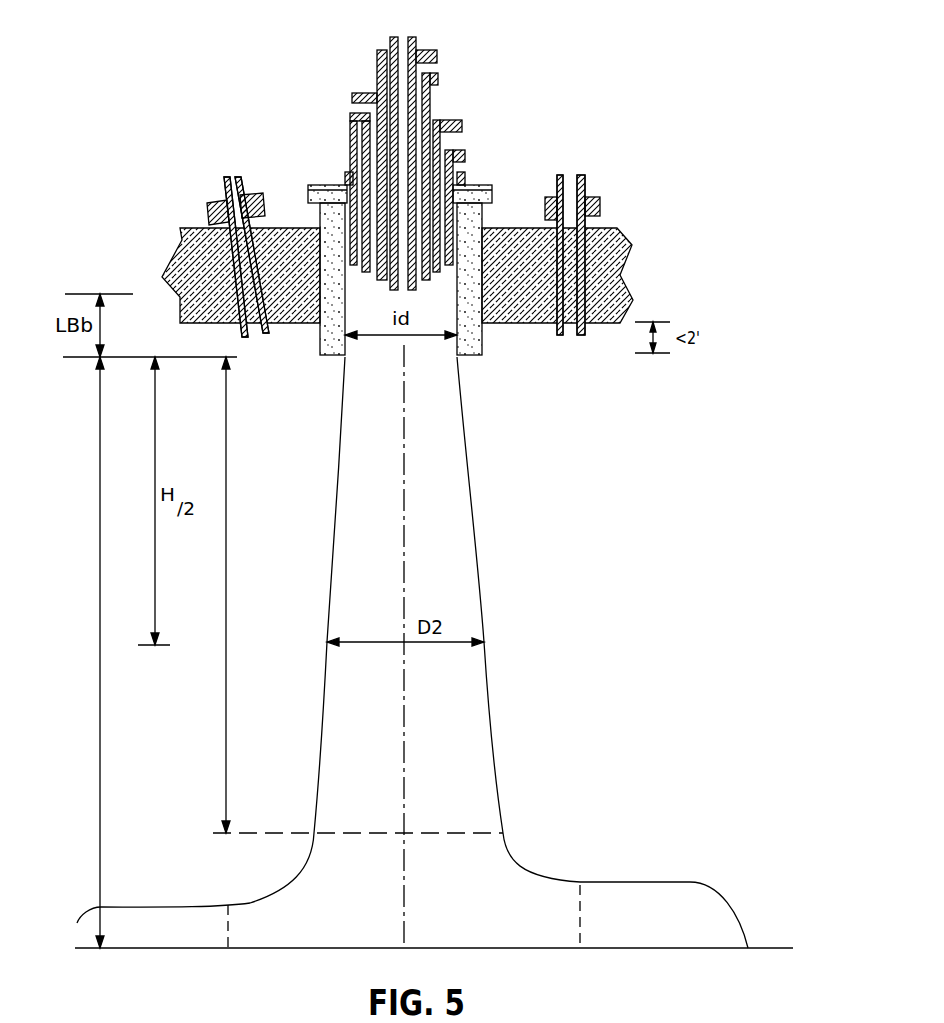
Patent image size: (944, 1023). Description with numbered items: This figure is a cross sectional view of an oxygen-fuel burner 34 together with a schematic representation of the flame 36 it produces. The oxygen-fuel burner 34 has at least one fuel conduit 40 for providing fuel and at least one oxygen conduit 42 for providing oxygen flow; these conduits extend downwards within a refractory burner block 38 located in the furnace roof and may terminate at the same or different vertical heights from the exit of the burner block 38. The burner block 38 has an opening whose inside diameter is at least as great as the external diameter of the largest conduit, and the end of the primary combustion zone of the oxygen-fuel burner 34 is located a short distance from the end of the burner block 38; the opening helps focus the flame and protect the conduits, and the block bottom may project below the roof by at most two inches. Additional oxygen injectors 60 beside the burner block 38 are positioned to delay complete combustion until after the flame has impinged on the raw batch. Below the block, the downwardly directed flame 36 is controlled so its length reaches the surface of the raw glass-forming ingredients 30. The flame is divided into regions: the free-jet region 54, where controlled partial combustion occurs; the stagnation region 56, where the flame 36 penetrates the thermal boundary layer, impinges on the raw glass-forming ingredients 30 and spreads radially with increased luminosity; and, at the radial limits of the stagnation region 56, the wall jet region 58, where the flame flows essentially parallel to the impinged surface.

The raw glass-forming ingredients 30 is at (766, 944).
The oxygen-fuel burner 34 is at (361, 145).
The flame 36 is at (480, 578).
The burner block 38 is at (483, 352).
The fuel conduit 40 is at (403, 33).
The oxygen conduit 42 is at (440, 62).
The free-jet region 54 is at (358, 595).
The stagnation region 56 is at (494, 897).
The wall jet region 58 is at (653, 913).
The additional oxygen injectors 60 is at (210, 225).